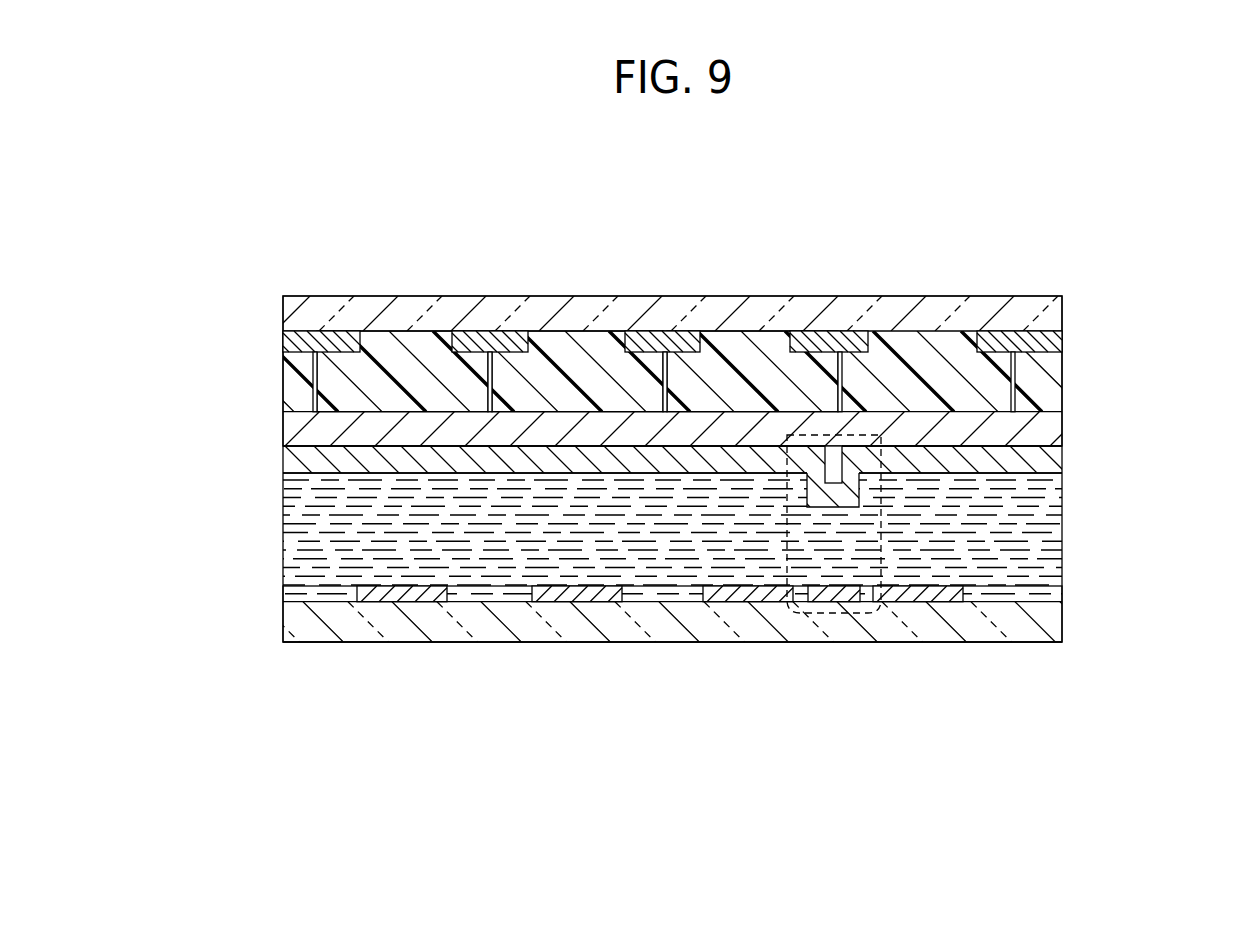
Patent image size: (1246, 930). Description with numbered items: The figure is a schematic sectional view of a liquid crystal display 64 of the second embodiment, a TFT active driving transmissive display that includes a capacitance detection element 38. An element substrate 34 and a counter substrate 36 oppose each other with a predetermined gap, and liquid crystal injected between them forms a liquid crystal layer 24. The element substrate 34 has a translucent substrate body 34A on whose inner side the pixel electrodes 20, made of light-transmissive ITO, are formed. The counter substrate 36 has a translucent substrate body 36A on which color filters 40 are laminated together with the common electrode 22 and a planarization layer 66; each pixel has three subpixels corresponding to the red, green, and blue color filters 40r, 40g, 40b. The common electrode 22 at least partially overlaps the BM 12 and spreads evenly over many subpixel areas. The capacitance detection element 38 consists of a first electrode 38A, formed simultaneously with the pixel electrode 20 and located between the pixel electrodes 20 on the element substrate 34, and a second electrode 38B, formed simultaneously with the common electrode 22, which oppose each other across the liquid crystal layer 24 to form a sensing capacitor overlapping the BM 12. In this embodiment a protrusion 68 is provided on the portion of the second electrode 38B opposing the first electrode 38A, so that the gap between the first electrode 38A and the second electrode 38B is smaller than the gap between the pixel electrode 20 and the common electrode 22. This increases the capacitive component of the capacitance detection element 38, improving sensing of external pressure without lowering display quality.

The liquid crystal display 64 is at (1042, 208).
The counter substrate 36 is at (257, 320).
The element substrate 34 is at (258, 627).
The substrate body 36A is at (1052, 317).
The BM 12 is at (987, 340).
The color filters 40 is at (1052, 393).
The red color filter 40r is at (412, 345).
The green color filter 40g is at (588, 345).
The blue color filter 40b is at (735, 345).
The planarization layer 66 is at (1052, 428).
The second electrode 38B is at (1052, 458).
The common electrode 22 is at (1052, 458).
The liquid crystal layer 24 is at (290, 531).
The protrusion 68 is at (807, 497).
The pixel electrode 20 is at (963, 591).
The first electrode 38A is at (850, 595).
The capacitance detection element 38 is at (823, 613).
The substrate body 34A is at (1053, 624).